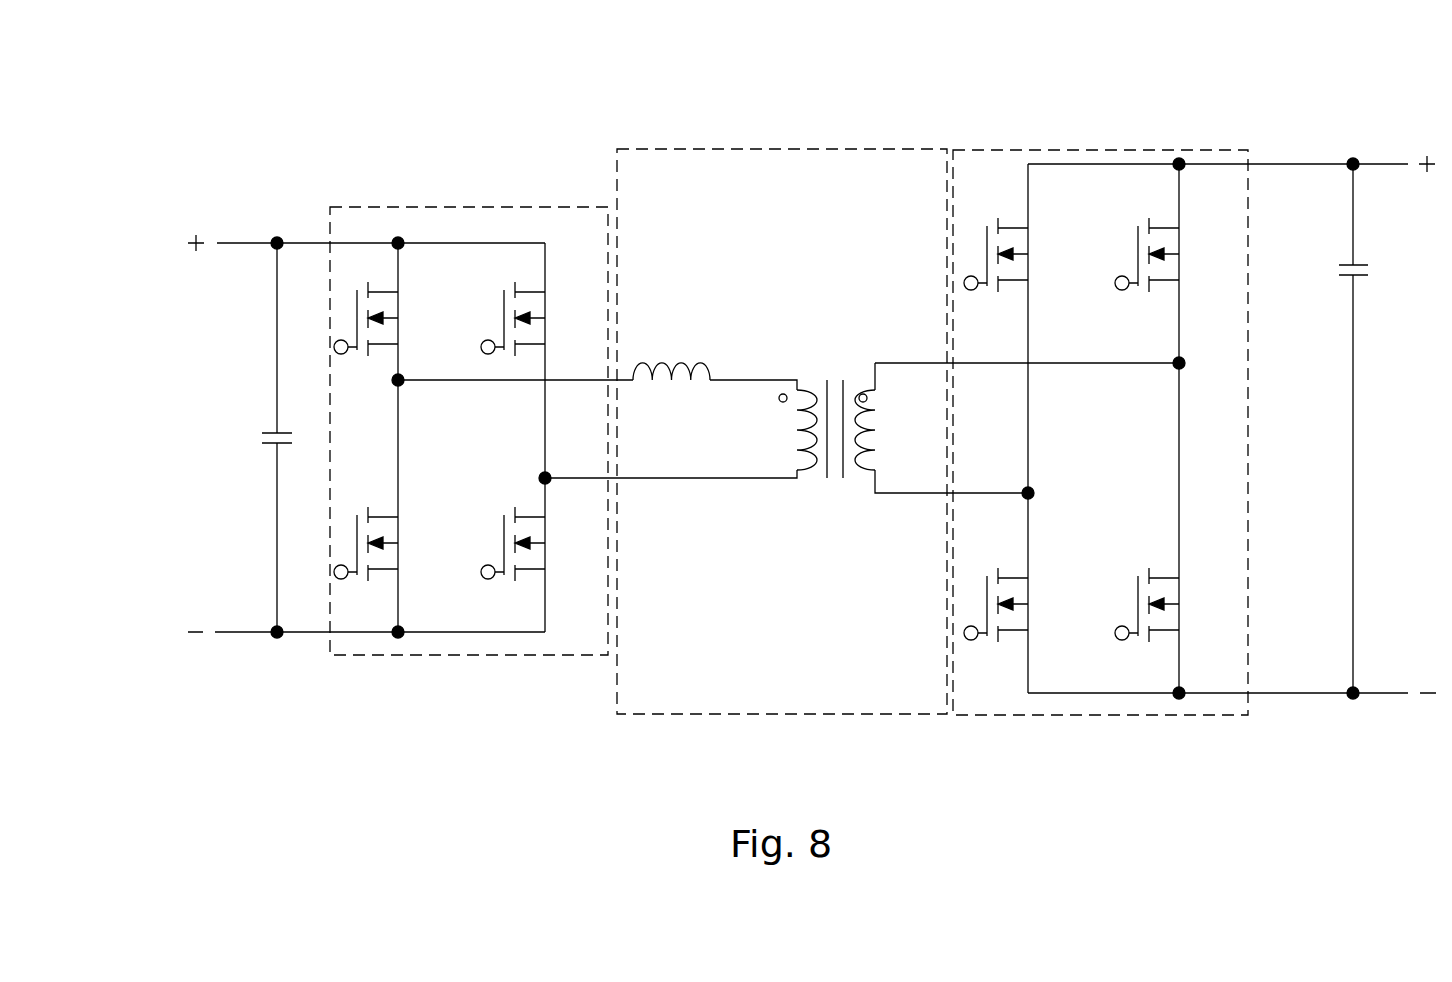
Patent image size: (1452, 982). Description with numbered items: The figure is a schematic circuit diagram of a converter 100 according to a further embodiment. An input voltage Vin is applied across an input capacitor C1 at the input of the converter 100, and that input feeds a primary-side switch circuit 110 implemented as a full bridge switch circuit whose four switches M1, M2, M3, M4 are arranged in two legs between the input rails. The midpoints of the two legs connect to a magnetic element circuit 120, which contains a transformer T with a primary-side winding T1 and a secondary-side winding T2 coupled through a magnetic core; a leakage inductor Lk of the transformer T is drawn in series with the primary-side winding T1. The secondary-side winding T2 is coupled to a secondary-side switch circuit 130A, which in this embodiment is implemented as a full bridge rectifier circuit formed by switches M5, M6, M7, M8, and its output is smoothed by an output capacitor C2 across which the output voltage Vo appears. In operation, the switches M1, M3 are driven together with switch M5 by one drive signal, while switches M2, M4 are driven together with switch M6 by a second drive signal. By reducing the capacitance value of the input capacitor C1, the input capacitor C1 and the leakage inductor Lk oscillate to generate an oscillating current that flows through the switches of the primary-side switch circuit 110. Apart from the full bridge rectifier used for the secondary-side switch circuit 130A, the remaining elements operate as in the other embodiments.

The converter 100 is at (187, 122).
The primary-side switch circuit 110 is at (530, 207).
The magnetic element circuit 120 is at (808, 149).
The secondary-side switch circuit 130A is at (1092, 150).
The switch M1 is at (390, 319).
The switch M2 is at (537, 319).
The switch M3 is at (537, 544).
The switch M4 is at (390, 544).
The switch M5 is at (1171, 255).
The switch M6 is at (1020, 255).
The switch M7 is at (1020, 605).
The switch M8 is at (1171, 605).
The input capacitor C1 is at (291, 437).
The output capacitor C2 is at (1375, 428).
The leakage inductor Lk is at (671, 352).
The transformer T is at (836, 410).
The primary-side winding T1 is at (779, 430).
The secondary-side winding T2 is at (893, 430).
The input voltage Vin is at (196, 437).
The output voltage Vo is at (1424, 432).